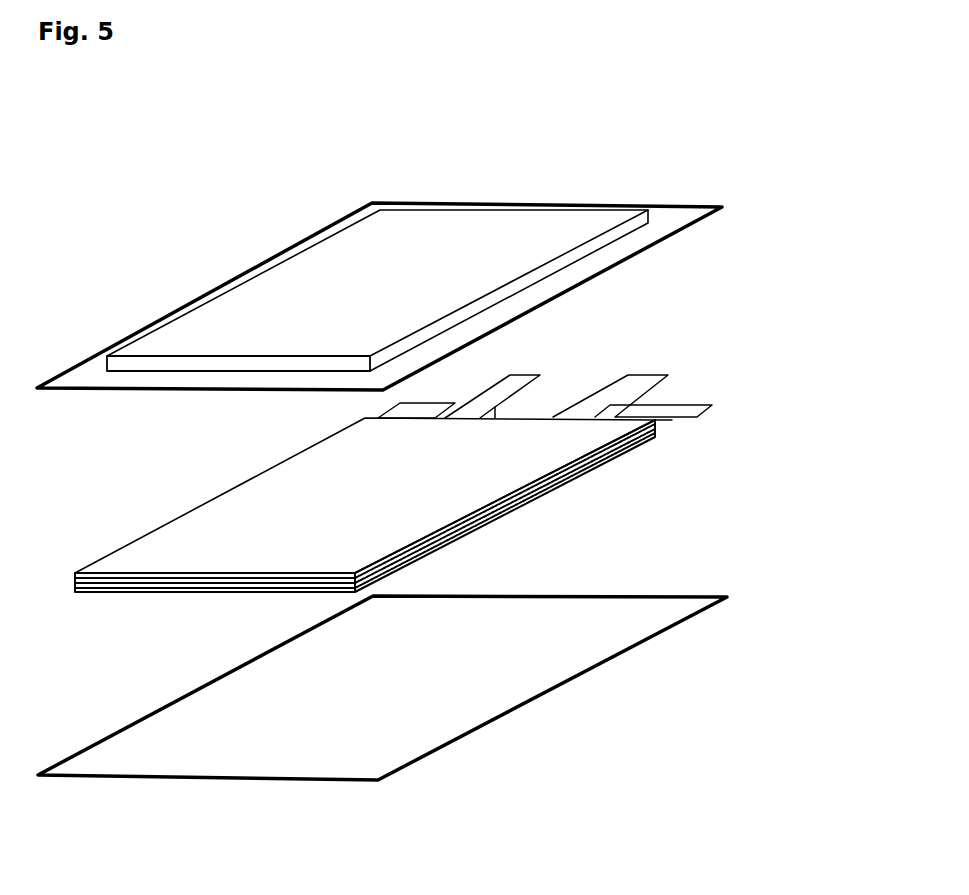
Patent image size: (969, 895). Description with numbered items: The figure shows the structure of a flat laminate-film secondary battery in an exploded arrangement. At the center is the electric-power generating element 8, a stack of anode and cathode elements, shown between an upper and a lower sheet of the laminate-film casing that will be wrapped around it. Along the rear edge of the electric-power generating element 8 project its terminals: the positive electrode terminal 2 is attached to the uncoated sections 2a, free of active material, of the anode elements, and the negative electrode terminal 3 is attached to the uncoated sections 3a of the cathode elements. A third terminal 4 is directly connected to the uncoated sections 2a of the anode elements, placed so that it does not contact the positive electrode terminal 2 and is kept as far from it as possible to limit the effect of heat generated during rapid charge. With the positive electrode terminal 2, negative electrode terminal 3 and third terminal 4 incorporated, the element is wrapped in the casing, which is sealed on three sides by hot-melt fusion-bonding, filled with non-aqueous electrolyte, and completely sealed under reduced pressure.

The electric-power generating element 8 is at (333, 484).
The negative electrode terminal 3 is at (512, 375).
The uncoated section 3a is at (432, 416).
The positive electrode terminal 2 is at (627, 383).
The uncoated section 2a is at (667, 420).
The third terminal 4 is at (697, 403).